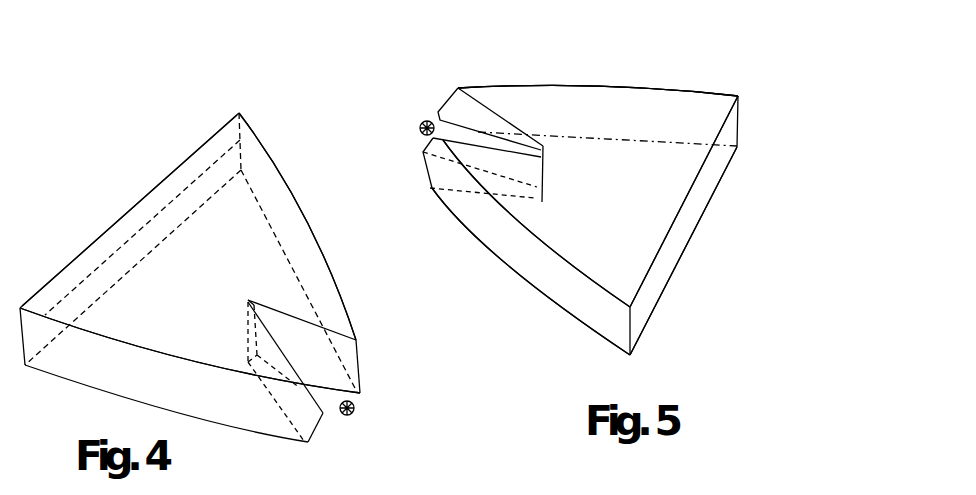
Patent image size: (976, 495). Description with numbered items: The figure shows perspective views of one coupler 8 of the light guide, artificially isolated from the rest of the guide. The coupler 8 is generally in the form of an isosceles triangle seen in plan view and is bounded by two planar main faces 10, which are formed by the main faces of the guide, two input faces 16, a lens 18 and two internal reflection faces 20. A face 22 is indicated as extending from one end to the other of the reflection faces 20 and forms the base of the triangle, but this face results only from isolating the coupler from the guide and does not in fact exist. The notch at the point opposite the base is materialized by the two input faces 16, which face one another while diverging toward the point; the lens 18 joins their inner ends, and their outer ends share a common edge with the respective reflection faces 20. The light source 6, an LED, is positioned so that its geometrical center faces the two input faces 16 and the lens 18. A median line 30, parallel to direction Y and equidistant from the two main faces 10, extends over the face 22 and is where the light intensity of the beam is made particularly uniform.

In FIG. 4, the light source 6 is at (352, 414).
In FIG. 5, the light source 6 is at (427, 128).
In FIG. 4, the coupler 8 is at (274, 145).
In FIG. 5, the coupler 8 is at (708, 77).
In FIG. 5, the planar main face 10 is at (565, 113).
In FIG. 4, the input face 16 is at (335, 381).
In FIG. 5, the input face 16 is at (455, 101).
In FIG. 4, the lens 18 is at (250, 297).
In FIG. 4, the internal reflection face 20 is at (310, 243).
In FIG. 5, the internal reflection face 20 is at (657, 95).
In FIG. 4, the face 22 is at (182, 160).
In FIG. 5, the face 22 is at (652, 319).
In FIG. 4, the median line 30 is at (217, 160).